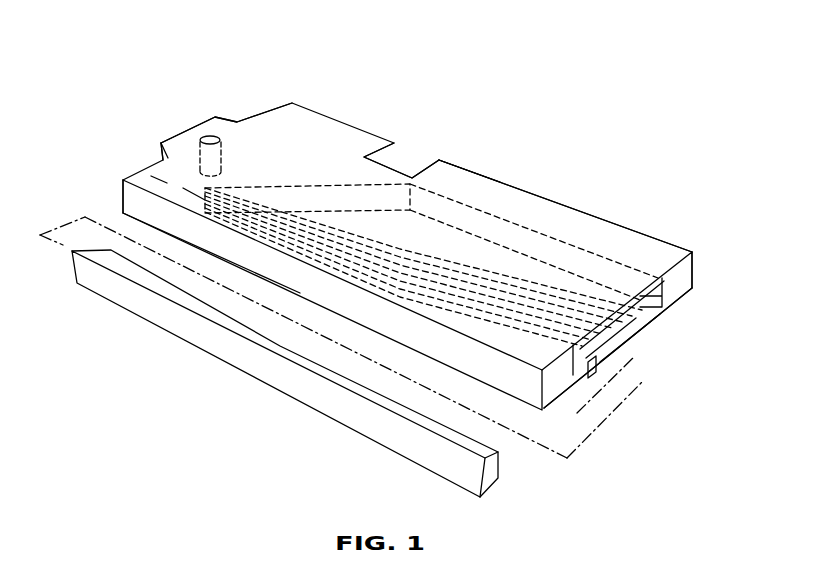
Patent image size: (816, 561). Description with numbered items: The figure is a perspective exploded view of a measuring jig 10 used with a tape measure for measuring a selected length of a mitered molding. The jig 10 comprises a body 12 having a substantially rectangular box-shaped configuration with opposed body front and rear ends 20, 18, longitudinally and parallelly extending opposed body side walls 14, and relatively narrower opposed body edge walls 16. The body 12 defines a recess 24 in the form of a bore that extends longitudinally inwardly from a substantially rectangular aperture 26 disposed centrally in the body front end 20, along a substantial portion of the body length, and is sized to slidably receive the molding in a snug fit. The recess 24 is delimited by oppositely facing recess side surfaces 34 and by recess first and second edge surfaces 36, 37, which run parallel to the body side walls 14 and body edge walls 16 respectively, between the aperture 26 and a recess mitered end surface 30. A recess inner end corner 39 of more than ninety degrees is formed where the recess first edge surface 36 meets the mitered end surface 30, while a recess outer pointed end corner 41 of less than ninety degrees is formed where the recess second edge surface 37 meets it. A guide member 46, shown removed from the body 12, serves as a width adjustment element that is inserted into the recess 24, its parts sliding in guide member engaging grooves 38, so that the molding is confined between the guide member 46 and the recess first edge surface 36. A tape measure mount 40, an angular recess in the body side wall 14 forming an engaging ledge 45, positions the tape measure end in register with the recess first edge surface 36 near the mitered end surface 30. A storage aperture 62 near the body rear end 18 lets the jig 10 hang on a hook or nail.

The measuring jig 10 is at (655, 89).
The body 12 is at (636, 216).
The body side wall 14 is at (553, 213).
The body edge wall 16 is at (133, 205).
The body rear end 18 is at (182, 132).
The body front end 20 is at (678, 277).
The recess 24 is at (639, 338).
The aperture 26 is at (655, 296).
The recess mitered end surface 30 is at (325, 187).
The recess side surface 34 is at (634, 315).
The recess first edge surface 36 is at (643, 283).
The recess second edge surface 37 is at (588, 456).
The guide member engaging groove 38 is at (488, 287).
The recess inner end corner 39 is at (422, 194).
The tape measure mount 40 is at (409, 150).
The recess outer pointed end corner 41 is at (128, 160).
The engaging ledge 45 is at (439, 160).
The guide member 46 is at (179, 354).
The storage aperture 62 is at (215, 135).